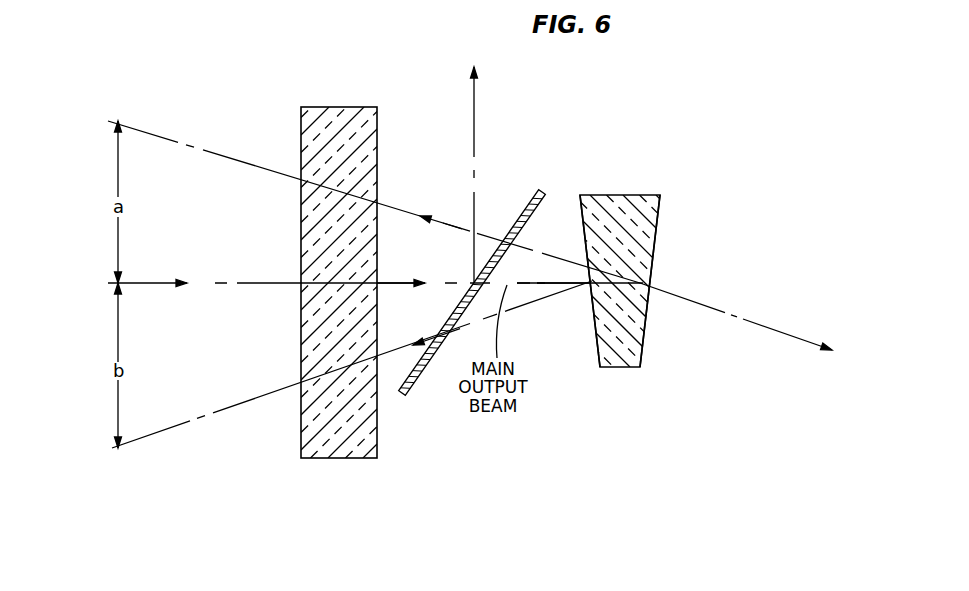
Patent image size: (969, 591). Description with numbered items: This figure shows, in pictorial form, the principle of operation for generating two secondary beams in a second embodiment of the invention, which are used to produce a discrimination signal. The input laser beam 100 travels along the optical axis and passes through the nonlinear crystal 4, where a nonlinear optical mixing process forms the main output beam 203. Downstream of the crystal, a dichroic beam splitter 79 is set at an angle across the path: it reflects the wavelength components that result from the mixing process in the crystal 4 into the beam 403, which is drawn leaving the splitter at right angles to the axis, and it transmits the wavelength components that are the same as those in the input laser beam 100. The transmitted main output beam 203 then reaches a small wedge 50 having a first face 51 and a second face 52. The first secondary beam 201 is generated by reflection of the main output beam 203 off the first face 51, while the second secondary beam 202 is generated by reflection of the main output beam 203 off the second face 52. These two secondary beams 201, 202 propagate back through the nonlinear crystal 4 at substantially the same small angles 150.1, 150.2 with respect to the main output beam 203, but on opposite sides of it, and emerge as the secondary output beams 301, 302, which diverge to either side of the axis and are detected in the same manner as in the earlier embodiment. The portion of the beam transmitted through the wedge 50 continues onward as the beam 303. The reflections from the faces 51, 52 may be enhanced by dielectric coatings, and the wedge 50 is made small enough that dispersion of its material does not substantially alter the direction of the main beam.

The nonlinear crystal 4 is at (355, 459).
The input laser beam 100 is at (152, 282).
The beam 403 is at (472, 100).
The secondary output beam 302 is at (165, 137).
The secondary output beam 301 is at (163, 431).
The transmitted output beam 303 is at (752, 322).
The second secondary beam 202 is at (407, 211).
The main output beam 203 is at (406, 281).
The first secondary beam 201 is at (400, 346).
The dichroic beam splitter 79 is at (410, 394).
The small angle 150.1 is at (546, 285).
The small angle 150.2 is at (558, 282).
The wedge 50 is at (616, 194).
The first face 51 is at (599, 366).
The second face 52 is at (642, 366).